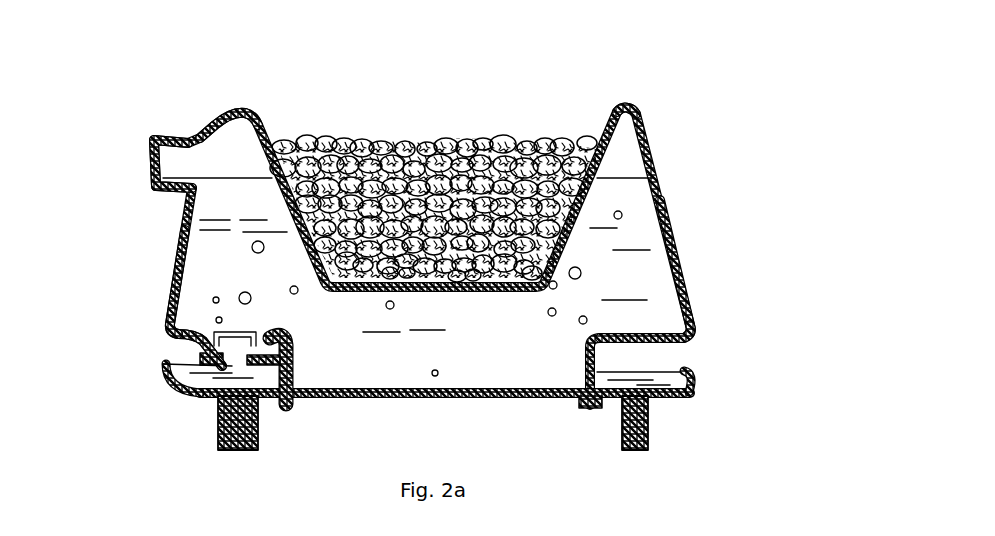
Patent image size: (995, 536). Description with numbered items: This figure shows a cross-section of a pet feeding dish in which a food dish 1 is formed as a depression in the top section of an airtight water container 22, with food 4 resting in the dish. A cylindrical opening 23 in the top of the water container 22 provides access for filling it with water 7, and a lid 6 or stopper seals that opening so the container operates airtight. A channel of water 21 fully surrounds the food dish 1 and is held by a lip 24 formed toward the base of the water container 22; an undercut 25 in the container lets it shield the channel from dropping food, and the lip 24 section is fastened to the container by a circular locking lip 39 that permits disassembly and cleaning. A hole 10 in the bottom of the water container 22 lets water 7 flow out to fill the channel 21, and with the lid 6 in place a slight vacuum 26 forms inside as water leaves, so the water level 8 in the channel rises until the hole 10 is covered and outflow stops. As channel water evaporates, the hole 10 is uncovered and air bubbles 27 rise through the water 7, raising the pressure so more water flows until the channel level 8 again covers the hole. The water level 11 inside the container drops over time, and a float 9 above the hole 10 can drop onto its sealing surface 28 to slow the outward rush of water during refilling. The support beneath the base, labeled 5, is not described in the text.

The food dish 1 is at (257, 120).
The food 4 is at (463, 148).
The left support foot 5 is at (268, 433).
The lid 6 is at (152, 193).
The water 7 is at (632, 278).
The water level 8 is at (652, 372).
The float 9 is at (253, 332).
The hole 10 is at (217, 393).
The water level 11 is at (633, 178).
The channel of water 21 is at (688, 398).
The water container 22 is at (692, 300).
The cylindrical opening 23 is at (205, 128).
The lip 24 is at (695, 382).
The undercut 25 is at (692, 343).
The vacuum 26 is at (636, 128).
The air bubbles 27 is at (207, 308).
The sealing surface 28 is at (200, 338).
The circular locking lip 39 is at (578, 402).